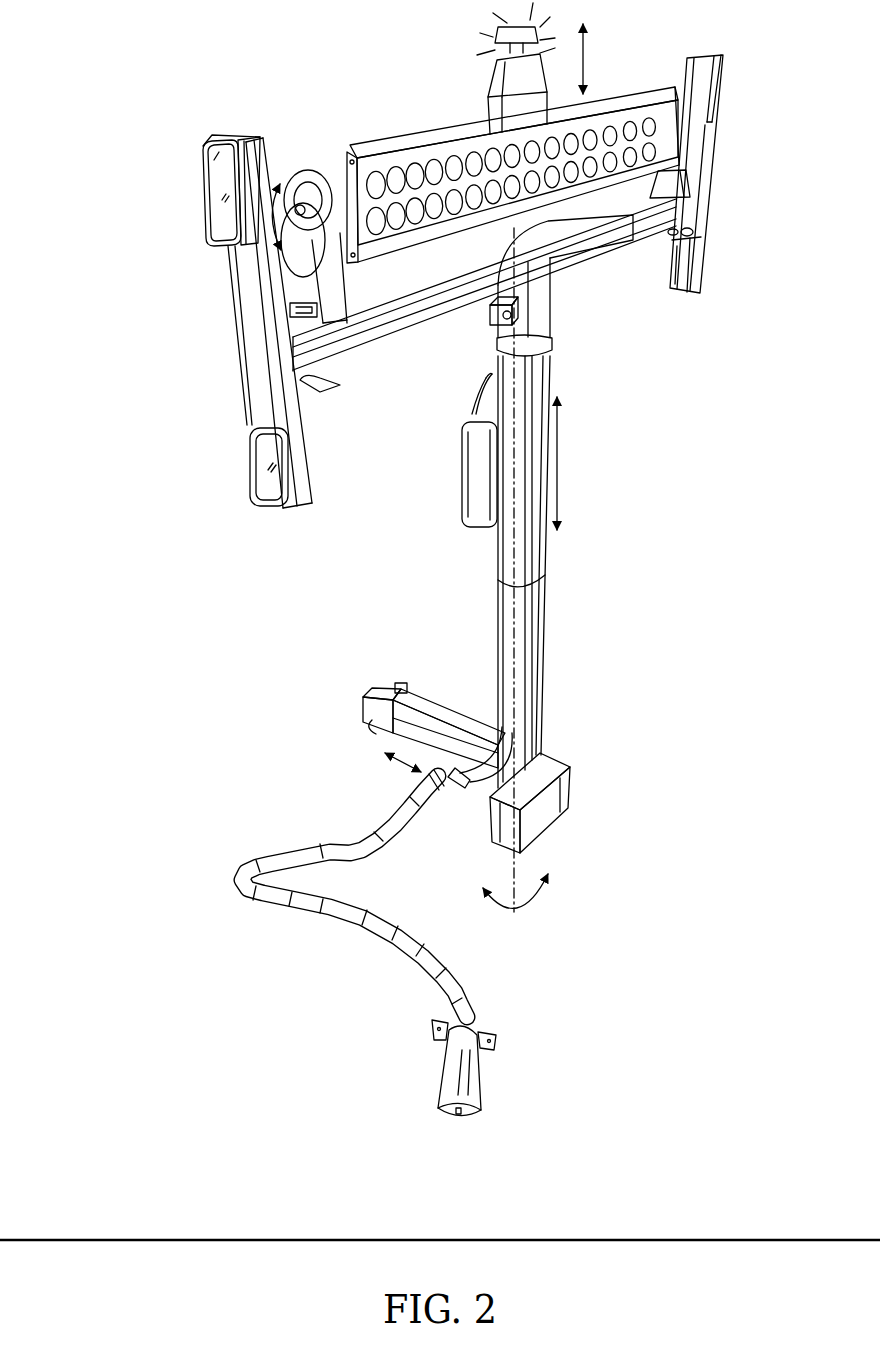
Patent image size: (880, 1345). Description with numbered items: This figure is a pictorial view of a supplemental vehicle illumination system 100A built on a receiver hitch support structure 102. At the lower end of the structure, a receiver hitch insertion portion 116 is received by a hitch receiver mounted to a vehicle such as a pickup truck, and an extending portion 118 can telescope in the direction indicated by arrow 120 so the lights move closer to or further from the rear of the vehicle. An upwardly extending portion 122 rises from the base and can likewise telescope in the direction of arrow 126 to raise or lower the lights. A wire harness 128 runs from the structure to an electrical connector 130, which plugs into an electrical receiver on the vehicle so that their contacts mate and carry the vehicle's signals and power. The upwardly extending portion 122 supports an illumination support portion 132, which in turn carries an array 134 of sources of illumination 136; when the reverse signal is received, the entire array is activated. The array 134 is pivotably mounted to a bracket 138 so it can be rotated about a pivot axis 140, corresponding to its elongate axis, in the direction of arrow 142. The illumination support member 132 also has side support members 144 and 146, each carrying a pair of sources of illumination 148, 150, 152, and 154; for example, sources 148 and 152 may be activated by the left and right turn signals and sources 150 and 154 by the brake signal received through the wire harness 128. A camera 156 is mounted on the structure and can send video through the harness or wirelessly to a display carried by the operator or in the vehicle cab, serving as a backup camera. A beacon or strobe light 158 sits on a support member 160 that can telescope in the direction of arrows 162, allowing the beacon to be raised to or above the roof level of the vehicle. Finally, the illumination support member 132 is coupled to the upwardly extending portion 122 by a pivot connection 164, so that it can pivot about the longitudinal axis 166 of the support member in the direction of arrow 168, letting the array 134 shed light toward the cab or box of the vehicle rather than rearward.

The supplemental vehicle illumination system 100A is at (82, 128).
The receiver hitch support structure 102 is at (552, 616).
The receiver hitch insertion portion 116 is at (370, 700).
The extending portion 118 is at (447, 722).
The arrow 120 is at (408, 773).
The upwardly extending portion 122 is at (543, 668).
The arrow 126 is at (568, 468).
The wire harness 128 is at (340, 910).
The electrical connector 130 is at (483, 1095).
The illumination support portion 132 is at (560, 258).
The array of sources of illumination 134 is at (393, 146).
The sources of illumination 136 is at (610, 120).
The bracket 138 is at (324, 278).
The pivot axis 140 is at (285, 240).
The arrow 142 is at (296, 165).
The side support member 144 is at (250, 322).
The side support member 146 is at (711, 195).
The source of illumination 148 is at (205, 205).
The source of illumination 150 is at (255, 470).
The source of illumination 152 is at (724, 73).
The source of illumination 154 is at (705, 263).
The camera 156 is at (490, 315).
The beacon or strobe light 158 is at (483, 50).
The support member 160 is at (487, 118).
The arrows 162 is at (586, 72).
The pivot connection 164 is at (554, 348).
The longitudinal axis 166 is at (517, 712).
The arrow 168 is at (552, 893).